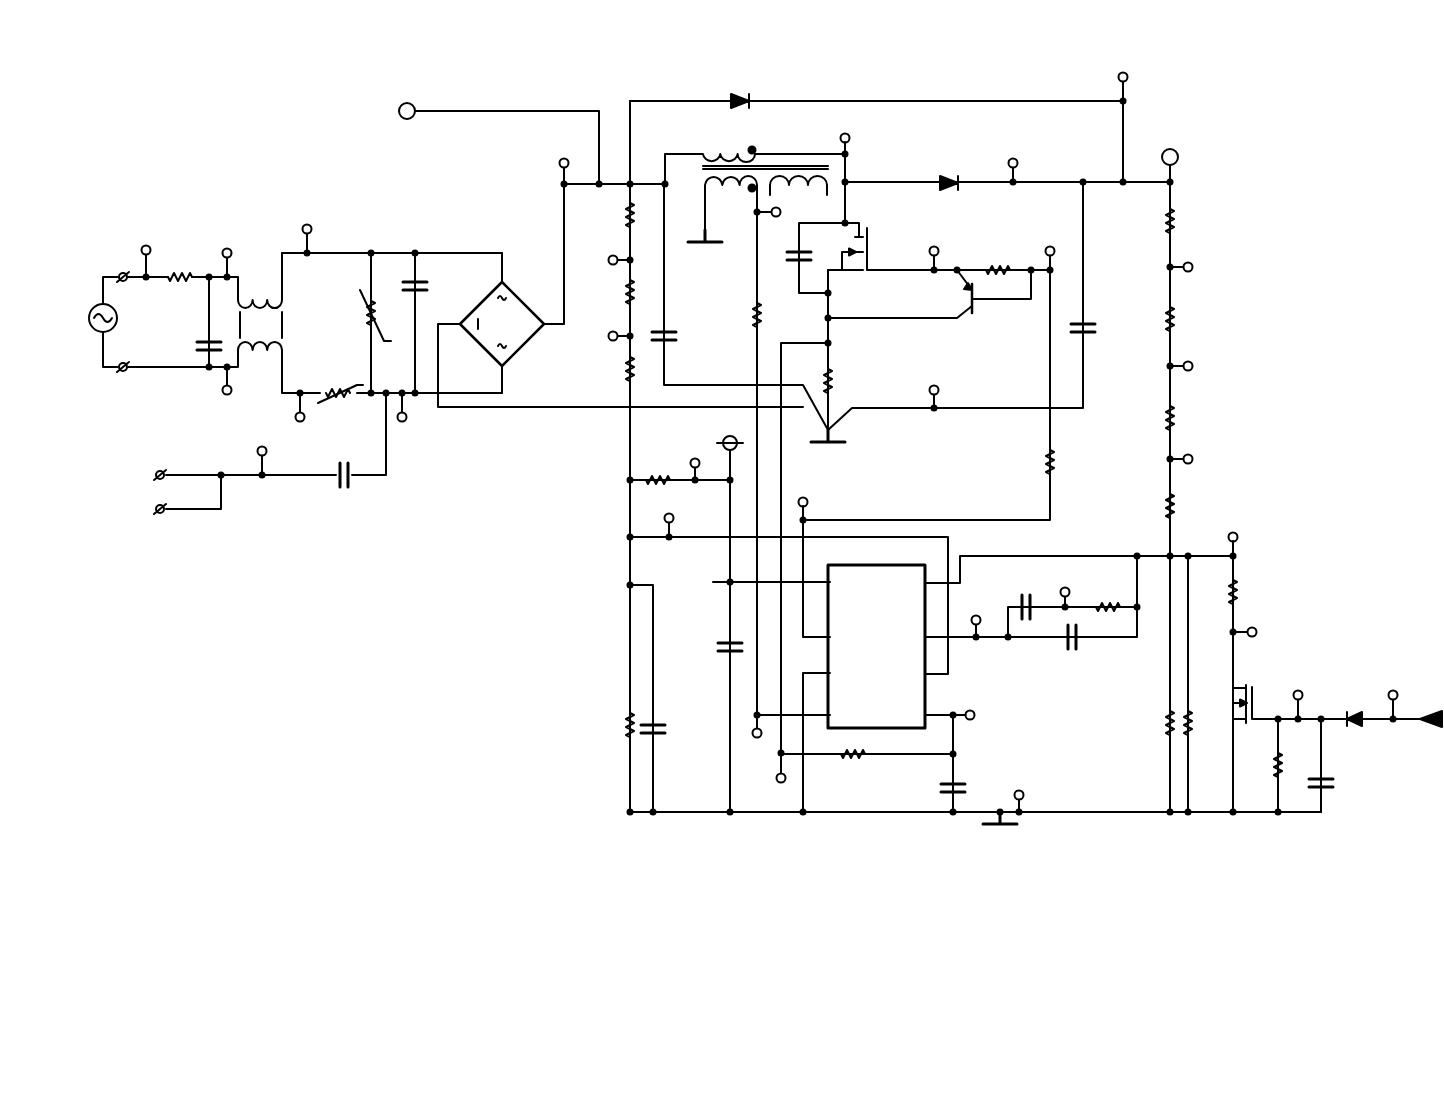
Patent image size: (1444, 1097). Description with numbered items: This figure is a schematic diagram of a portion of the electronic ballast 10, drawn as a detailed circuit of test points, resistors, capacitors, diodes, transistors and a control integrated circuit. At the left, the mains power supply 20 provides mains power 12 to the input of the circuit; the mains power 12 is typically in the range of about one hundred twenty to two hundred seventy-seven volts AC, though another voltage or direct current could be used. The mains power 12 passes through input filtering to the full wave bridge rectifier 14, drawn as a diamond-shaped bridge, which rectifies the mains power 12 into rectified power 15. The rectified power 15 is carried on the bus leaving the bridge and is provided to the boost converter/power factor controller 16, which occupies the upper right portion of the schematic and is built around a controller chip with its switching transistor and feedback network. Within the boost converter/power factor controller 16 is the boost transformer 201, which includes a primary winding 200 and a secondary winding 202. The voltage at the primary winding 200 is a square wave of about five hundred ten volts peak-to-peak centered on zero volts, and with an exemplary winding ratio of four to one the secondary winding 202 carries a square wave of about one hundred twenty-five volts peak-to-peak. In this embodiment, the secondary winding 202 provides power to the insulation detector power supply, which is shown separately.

The electronic ballast 10 is at (227, 118).
The mains power 12 is at (160, 275).
The full wave bridge rectifier 14 is at (483, 406).
The rectified power 15 is at (612, 182).
The boost converter/power factor controller 16 is at (770, 63).
The mains power supply 20 is at (92, 300).
The primary winding 200 is at (742, 150).
The boost transformer 201 is at (706, 137).
The secondary winding 202 is at (816, 170).